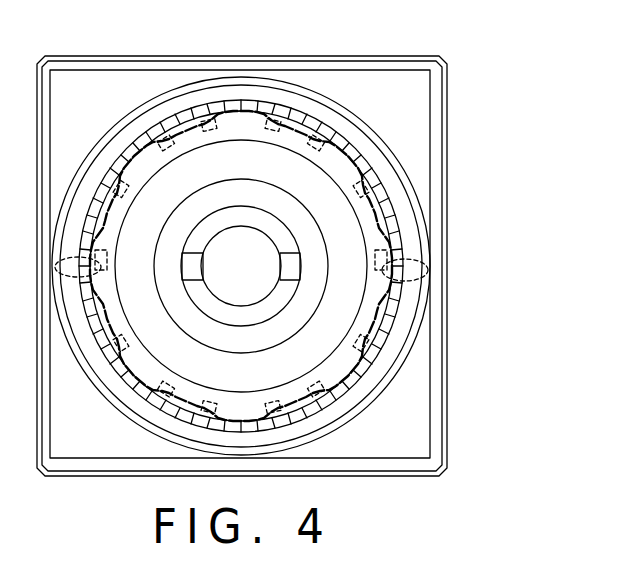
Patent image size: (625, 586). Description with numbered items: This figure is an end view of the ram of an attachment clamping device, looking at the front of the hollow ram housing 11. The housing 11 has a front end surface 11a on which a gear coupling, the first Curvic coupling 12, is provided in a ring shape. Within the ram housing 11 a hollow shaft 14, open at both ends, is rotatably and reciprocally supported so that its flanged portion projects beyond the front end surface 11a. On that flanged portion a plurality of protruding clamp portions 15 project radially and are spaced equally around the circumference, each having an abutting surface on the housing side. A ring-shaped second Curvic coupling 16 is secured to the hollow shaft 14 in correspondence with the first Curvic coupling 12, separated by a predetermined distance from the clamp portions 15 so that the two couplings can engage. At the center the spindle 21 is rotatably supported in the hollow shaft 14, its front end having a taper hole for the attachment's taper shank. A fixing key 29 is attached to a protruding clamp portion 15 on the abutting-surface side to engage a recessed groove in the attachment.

The ram housing 11 is at (448, 125).
The front end surface 11a is at (140, 417).
The first Curvic coupling 12 is at (322, 127).
The hollow shaft 14 is at (320, 347).
The protruding clamp portions 15 is at (353, 170).
The second Curvic coupling 16 is at (382, 211).
The spindle 21 is at (248, 316).
The fixing key 29 is at (393, 252).